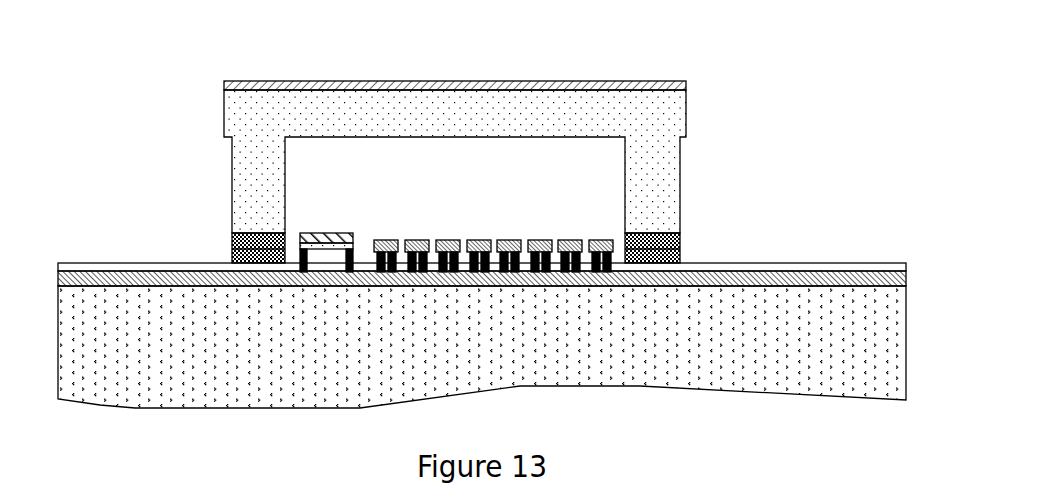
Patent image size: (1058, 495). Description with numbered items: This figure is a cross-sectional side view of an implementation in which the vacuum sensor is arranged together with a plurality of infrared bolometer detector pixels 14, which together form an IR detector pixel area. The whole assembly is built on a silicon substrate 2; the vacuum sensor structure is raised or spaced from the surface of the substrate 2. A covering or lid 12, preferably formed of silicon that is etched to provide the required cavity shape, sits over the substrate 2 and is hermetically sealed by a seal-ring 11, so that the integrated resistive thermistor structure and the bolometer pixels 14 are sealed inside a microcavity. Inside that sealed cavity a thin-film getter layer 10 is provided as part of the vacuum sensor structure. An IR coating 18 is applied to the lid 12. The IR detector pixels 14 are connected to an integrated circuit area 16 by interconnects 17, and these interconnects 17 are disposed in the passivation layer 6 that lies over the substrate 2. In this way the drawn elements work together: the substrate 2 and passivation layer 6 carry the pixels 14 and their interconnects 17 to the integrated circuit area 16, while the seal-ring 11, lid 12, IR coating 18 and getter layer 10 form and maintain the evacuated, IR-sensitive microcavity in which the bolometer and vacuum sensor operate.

The silicon substrate 2 is at (94, 378).
The passivation layer 6 is at (814, 268).
The thin-film getter layer 10 is at (325, 237).
The seal-ring 11 is at (236, 245).
The covering or lid 12 is at (253, 121).
The infrared bolometer detector pixels 14 is at (508, 240).
The integrated circuit area 16 is at (760, 281).
The interconnects 17 is at (612, 255).
The IR coating 18 is at (637, 80).